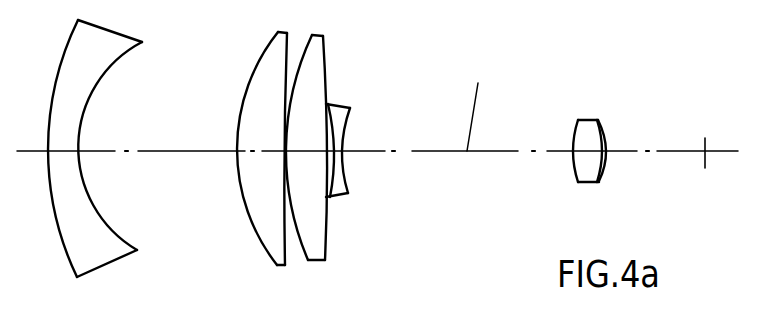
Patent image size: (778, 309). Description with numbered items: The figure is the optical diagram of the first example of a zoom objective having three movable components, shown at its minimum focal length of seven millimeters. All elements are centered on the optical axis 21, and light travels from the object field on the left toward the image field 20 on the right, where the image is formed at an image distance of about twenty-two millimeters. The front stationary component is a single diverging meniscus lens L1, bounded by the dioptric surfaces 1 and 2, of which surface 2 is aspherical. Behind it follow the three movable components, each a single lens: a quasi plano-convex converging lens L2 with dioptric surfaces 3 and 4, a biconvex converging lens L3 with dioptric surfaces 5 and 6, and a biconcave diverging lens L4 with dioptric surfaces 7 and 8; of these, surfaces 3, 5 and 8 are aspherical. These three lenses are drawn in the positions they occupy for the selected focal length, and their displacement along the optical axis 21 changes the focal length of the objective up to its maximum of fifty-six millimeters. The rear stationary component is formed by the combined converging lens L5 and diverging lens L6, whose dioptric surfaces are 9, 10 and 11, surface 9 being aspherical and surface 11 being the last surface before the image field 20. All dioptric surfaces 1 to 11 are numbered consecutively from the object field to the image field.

The dioptric surface 1 is at (62, 238).
The dioptric surface 2 is at (104, 219).
The dioptric surface 3 is at (248, 223).
The dioptric surface 4 is at (289, 250).
The dioptric surface 5 is at (308, 254).
The dioptric surface 6 is at (325, 238).
The dioptric surface 7 is at (331, 188).
The dioptric surface 8 is at (348, 184).
The dioptric surface 9 is at (575, 167).
The dioptric surface 10 is at (600, 176).
The dioptric surface 11 is at (603, 166).
The image field 20 is at (705, 146).
The optical axis 21 is at (479, 103).
The diverging meniscus lens L1 is at (107, 148).
The quasi plano-convex converging lens L2 is at (249, 163).
The biconvex converging lens L3 is at (327, 162).
The biconcave diverging lens L4 is at (374, 125).
The converging lens L5 is at (574, 134).
The diverging lens L6 is at (622, 123).